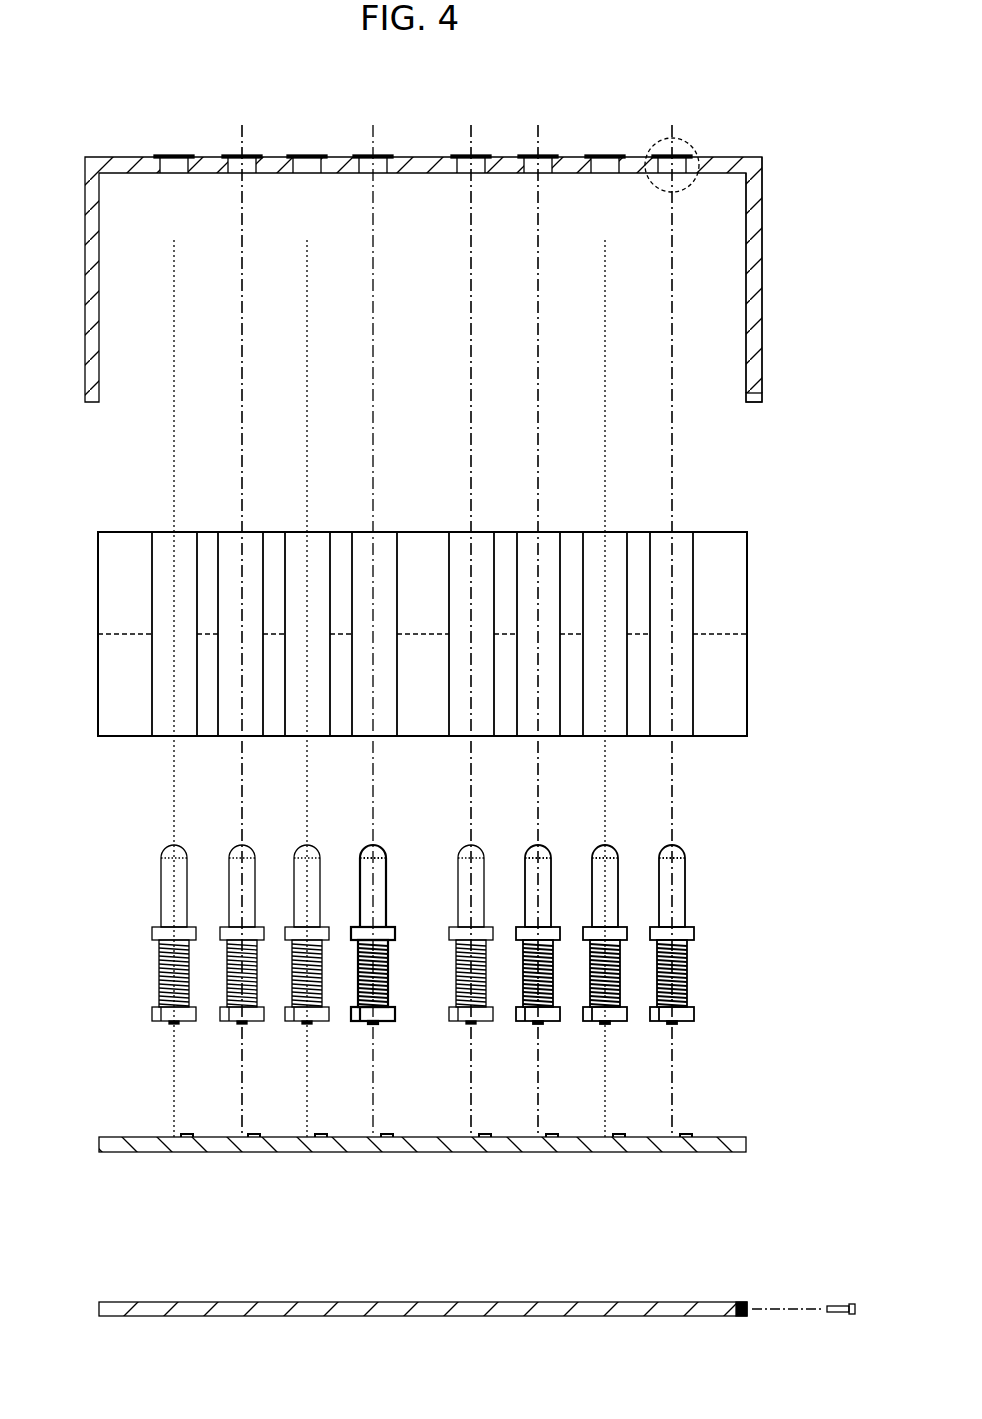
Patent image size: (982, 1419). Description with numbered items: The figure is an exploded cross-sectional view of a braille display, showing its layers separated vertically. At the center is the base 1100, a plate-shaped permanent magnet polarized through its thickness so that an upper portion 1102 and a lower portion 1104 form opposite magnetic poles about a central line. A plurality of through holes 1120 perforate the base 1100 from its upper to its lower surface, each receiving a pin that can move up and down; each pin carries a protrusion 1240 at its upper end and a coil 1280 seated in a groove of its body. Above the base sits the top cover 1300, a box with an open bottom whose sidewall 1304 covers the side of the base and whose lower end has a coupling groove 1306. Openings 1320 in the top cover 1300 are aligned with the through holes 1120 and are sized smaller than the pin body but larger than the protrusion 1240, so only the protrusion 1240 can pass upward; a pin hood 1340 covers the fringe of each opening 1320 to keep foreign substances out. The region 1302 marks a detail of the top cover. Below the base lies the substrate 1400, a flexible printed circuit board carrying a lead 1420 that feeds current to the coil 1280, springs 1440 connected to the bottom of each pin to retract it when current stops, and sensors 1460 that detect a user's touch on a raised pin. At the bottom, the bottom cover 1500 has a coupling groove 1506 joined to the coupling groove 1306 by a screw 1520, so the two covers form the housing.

The base 1100 is at (419, 603).
The upper portion 1102 is at (116, 579).
The lower portion 1104 is at (125, 660).
The through hole 1120 is at (162, 540).
The protrusion 1240 is at (674, 882).
The coil 1280 is at (688, 958).
The top cover 1300 is at (465, 244).
The terminal opening region 1302 is at (752, 157).
The sidewall 1304 is at (762, 200).
The coupling groove 1306 is at (762, 395).
The opening 1320 is at (310, 174).
The pin hood 1340 is at (160, 155).
The substrate 1400 is at (422, 1181).
The lead 1420 is at (155, 1015).
The spring 1440 is at (680, 1025).
The sensor 1460 is at (308, 1152).
The bottom cover 1500 is at (444, 1275).
The coupling groove 1506 is at (738, 1302).
The screw 1520 is at (828, 1302).